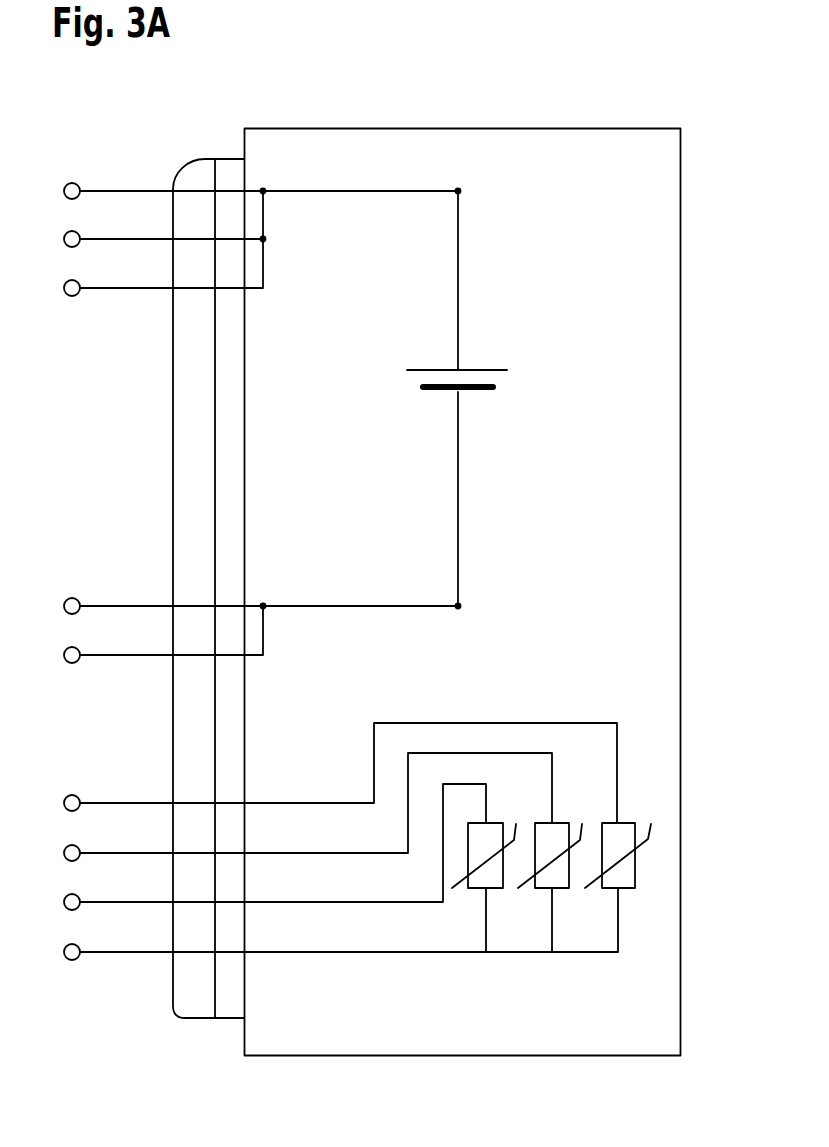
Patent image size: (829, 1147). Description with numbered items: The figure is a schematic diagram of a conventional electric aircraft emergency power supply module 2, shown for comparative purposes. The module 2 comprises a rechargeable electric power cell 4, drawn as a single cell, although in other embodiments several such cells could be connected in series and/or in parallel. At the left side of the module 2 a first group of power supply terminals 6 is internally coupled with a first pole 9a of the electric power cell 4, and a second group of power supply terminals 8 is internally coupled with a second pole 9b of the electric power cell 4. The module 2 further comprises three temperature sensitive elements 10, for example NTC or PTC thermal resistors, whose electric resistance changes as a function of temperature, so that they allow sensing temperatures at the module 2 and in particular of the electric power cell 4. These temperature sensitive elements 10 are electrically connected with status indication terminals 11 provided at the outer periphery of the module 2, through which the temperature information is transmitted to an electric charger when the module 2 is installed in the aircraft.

The conventional electric aircraft emergency power supply module 2 is at (665, 95).
The rechargeable electric power cell 4 is at (506, 383).
The first group of power supply terminals 6 is at (105, 162).
The second group of power supply terminals 8 is at (103, 580).
The first pole 9a is at (458, 191).
The second pole 9b is at (458, 606).
The temperature sensitive elements 10 is at (643, 863).
The status indication terminals 11 is at (103, 778).